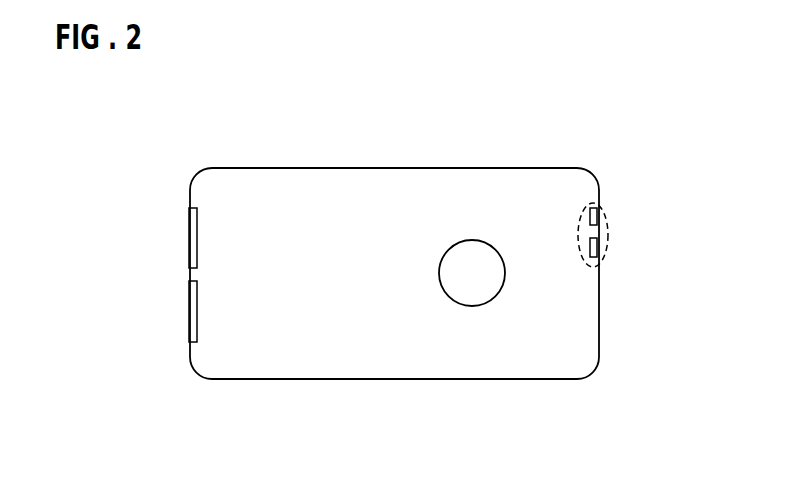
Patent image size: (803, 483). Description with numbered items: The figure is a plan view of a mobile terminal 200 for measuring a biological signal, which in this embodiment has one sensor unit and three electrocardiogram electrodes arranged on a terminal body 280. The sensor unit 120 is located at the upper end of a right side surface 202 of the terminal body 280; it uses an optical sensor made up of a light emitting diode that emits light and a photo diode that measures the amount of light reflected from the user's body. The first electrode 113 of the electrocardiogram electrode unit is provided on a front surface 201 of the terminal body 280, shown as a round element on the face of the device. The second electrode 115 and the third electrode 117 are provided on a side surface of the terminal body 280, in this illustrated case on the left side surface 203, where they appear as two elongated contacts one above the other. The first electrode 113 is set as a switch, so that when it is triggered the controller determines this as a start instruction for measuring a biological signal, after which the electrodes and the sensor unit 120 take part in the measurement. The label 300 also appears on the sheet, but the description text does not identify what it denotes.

The mobile terminal 200 is at (614, 120).
The front surface 201 is at (315, 181).
The terminal body 280 is at (451, 168).
The second electrode 115 is at (189, 237).
The third electrode 117 is at (189, 310).
The left side surface 203 is at (189, 352).
The sensor unit 120 is at (608, 240).
The right side surface 202 is at (599, 320).
The first electrode 113 is at (470, 306).
The electronic device 300 is at (676, 470).